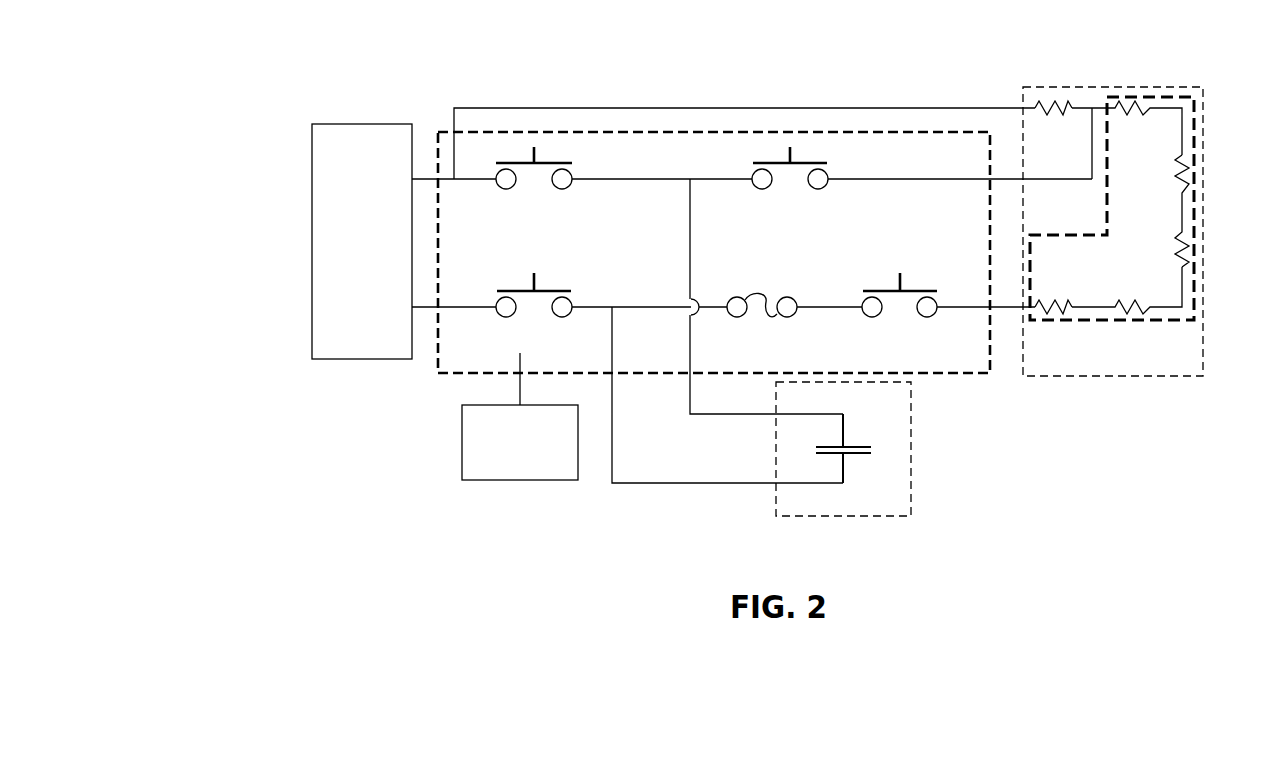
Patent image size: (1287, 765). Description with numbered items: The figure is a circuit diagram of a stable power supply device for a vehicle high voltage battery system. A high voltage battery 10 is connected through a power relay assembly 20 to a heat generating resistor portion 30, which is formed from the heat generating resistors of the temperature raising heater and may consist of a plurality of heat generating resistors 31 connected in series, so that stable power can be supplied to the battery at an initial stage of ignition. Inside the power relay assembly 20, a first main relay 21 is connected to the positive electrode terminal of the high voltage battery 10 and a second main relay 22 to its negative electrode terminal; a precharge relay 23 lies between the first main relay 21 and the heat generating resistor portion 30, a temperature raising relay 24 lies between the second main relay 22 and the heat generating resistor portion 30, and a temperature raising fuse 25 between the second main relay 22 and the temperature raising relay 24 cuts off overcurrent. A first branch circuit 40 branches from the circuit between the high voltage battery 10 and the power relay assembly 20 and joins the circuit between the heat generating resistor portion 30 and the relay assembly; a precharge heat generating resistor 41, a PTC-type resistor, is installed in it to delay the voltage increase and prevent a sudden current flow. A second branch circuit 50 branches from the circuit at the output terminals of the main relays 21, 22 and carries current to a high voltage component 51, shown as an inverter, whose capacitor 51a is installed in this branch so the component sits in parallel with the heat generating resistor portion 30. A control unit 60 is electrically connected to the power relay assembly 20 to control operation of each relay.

The high voltage battery 10 is at (366, 124).
The power relay assembly 20 is at (905, 132).
The first main relay 21 is at (551, 160).
The second main relay 22 is at (552, 290).
The precharge relay 23 is at (806, 163).
The temperature raising relay 24 is at (924, 288).
The temperature raising fuse 25 is at (757, 297).
The heat generating resistor portion 30 is at (1181, 97).
The heat generating resistor 31 is at (1189, 160).
The first branch circuit 40 is at (679, 108).
The precharge heat generating resistor 41 is at (1052, 108).
The second branch circuit 50 is at (680, 484).
The high voltage component 51 is at (911, 484).
The capacitor 51a is at (858, 443).
The control unit 60 is at (462, 420).